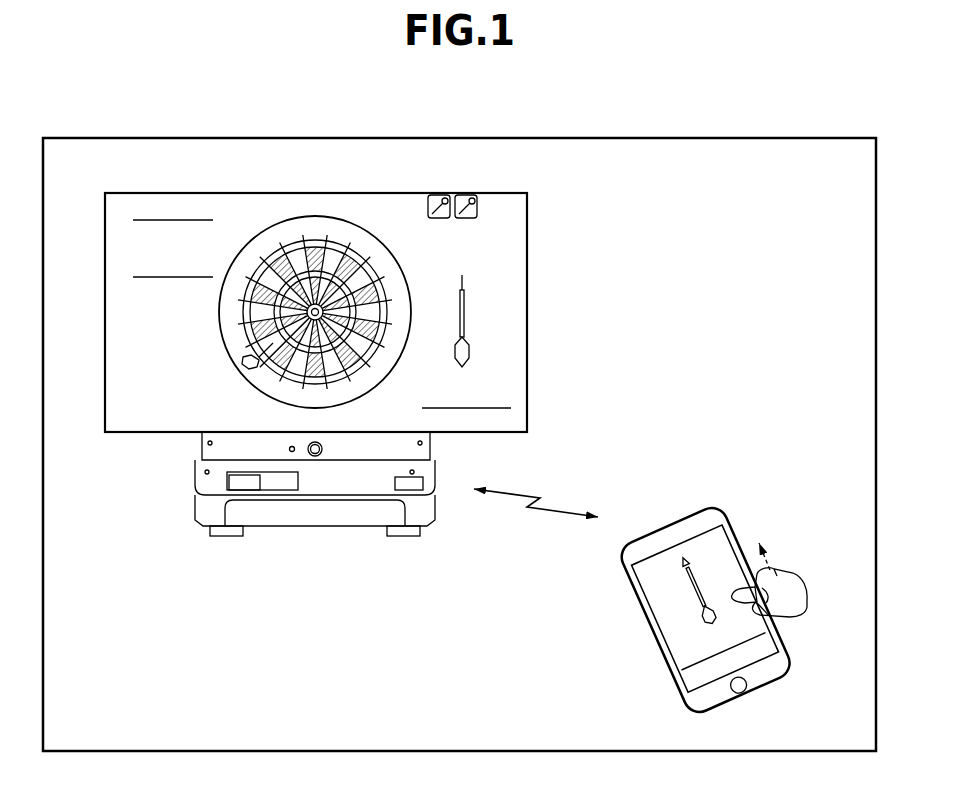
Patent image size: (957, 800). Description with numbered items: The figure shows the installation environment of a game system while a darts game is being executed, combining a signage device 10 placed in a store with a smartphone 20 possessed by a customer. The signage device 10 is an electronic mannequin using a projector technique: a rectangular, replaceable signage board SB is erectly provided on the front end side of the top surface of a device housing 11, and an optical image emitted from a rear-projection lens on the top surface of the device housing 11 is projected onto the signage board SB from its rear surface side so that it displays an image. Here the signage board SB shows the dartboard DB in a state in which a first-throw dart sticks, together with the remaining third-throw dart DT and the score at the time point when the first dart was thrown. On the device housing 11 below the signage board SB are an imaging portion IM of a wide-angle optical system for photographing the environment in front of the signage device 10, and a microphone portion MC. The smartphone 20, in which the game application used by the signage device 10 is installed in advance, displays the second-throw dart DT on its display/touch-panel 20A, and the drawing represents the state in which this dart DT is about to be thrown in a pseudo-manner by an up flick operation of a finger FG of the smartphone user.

The signage device 10 is at (552, 236).
The device housing 11 is at (433, 472).
The smartphone 20 is at (695, 490).
The display/touch-panel 20A is at (670, 605).
The dartboard DB is at (387, 242).
The signage board SB is at (520, 340).
The microphone portion MC is at (289, 449).
The imaging portion IM is at (322, 447).
The finger FG is at (732, 588).
The dart DT is at (692, 590).